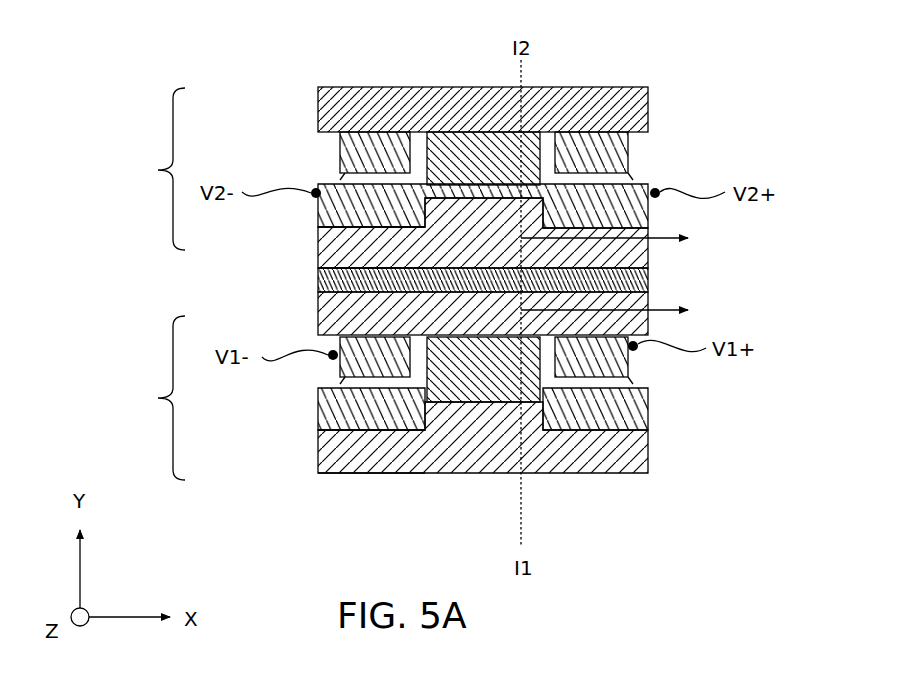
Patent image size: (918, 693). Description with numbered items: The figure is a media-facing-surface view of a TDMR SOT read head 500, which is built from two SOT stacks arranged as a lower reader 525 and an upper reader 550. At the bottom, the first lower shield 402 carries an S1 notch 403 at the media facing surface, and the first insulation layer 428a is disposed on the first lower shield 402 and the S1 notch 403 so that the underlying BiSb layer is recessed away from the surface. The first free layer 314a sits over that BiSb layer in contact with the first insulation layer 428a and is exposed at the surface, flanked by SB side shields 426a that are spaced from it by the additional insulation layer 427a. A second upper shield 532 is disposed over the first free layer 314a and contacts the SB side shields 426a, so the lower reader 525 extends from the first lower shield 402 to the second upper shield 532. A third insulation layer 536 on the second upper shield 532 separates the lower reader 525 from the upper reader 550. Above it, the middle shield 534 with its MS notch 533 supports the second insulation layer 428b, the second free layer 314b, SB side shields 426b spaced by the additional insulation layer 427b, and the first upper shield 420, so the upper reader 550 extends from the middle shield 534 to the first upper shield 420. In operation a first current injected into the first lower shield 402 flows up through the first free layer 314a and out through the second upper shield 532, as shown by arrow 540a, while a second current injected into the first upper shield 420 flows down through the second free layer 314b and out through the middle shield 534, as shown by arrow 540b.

The TDMR SOT read head 500 is at (186, 56).
The upper reader 550 is at (146, 169).
The lower reader 525 is at (146, 398).
The first upper shield 420 is at (483, 109).
The SB side shields 426b is at (484, 152).
The second free layer 314b is at (483, 158).
The additional insulation layer 427b is at (343, 180).
The second insulation layer 428b is at (483, 206).
The MS notch 533 is at (517, 218).
The middle shield 534 is at (371, 247).
The third insulation layer 536 is at (648, 278).
The second upper shield 532 is at (517, 325).
The SB side shields 426a is at (484, 357).
The first free layer 314a is at (483, 369).
The additional insulation layer 427a is at (345, 383).
The first insulation layer 428a is at (483, 409).
The S1 notch 403 is at (483, 437).
The first lower shield 402 is at (371, 451).
The arrow 540b is at (522, 74).
The arrow 540a is at (522, 532).